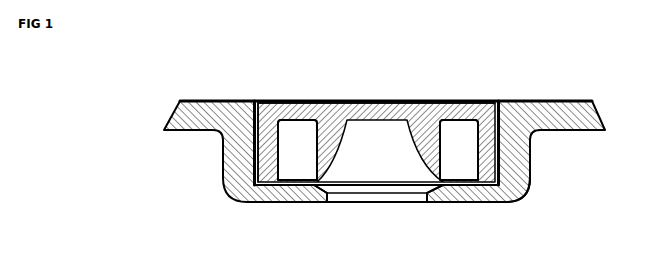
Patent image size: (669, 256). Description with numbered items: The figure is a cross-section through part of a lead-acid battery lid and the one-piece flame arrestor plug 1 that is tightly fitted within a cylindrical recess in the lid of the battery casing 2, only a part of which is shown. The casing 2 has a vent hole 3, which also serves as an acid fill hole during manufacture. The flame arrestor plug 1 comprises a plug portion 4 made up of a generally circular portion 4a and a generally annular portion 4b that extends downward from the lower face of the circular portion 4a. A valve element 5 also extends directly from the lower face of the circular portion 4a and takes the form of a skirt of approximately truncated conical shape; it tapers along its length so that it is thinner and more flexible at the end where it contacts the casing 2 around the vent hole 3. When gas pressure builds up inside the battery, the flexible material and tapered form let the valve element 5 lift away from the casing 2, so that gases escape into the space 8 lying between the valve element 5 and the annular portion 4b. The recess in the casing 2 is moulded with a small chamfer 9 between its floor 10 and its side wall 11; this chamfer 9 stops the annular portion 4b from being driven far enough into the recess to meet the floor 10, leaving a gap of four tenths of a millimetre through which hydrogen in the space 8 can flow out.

The flame arrestor plug 1 is at (494, 102).
The battery casing 2 is at (545, 107).
The vent hole 3 is at (393, 197).
The plug portion 4 is at (275, 113).
The circular portion 4a is at (335, 107).
The annular portion 4b is at (270, 164).
The valve element 5 is at (322, 186).
The space 8 is at (295, 138).
The chamfer 9 is at (517, 186).
The floor 10 is at (487, 187).
The side wall 11 is at (503, 142).